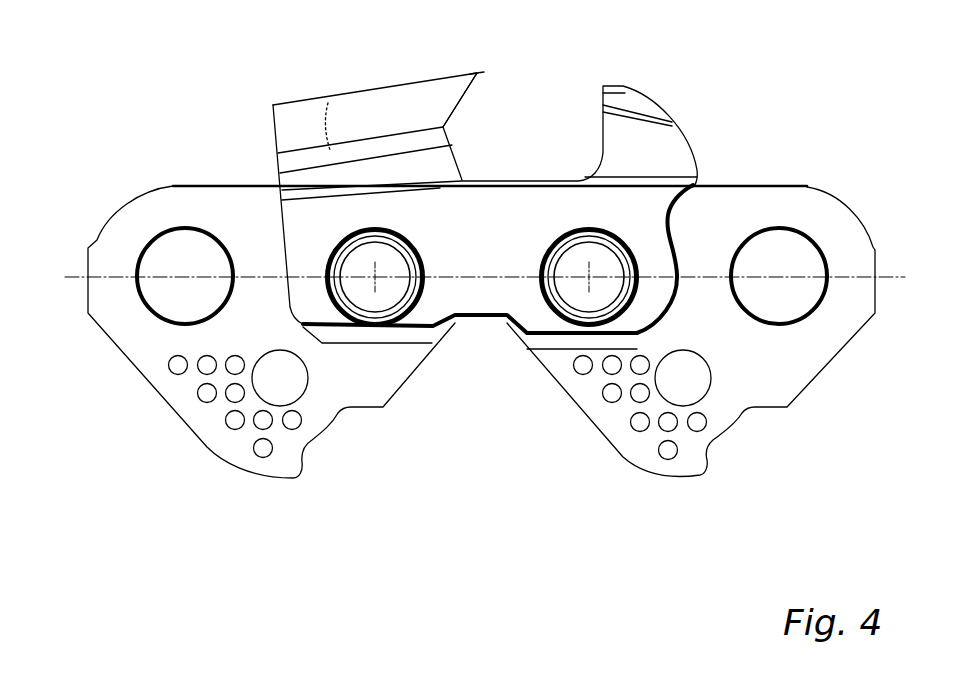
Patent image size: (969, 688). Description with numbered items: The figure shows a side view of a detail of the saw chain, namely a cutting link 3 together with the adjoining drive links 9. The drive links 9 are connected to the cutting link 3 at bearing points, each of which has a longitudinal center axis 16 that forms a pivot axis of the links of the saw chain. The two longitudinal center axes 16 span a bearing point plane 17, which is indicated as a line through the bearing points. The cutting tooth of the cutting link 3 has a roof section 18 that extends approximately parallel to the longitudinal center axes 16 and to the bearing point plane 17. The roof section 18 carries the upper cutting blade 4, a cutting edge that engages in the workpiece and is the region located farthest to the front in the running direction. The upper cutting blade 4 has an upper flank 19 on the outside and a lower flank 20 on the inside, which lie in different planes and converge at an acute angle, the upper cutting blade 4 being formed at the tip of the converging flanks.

The cutting link 3 is at (473, 295).
The upper cutting blade 4 is at (478, 74).
The drive link 9 is at (225, 443).
The longitudinal center axis 16 is at (372, 276).
The bearing point plane 17 is at (80, 277).
The roof section 18 is at (342, 92).
The upper flank 19 is at (478, 73).
The lower flank 20 is at (478, 75).